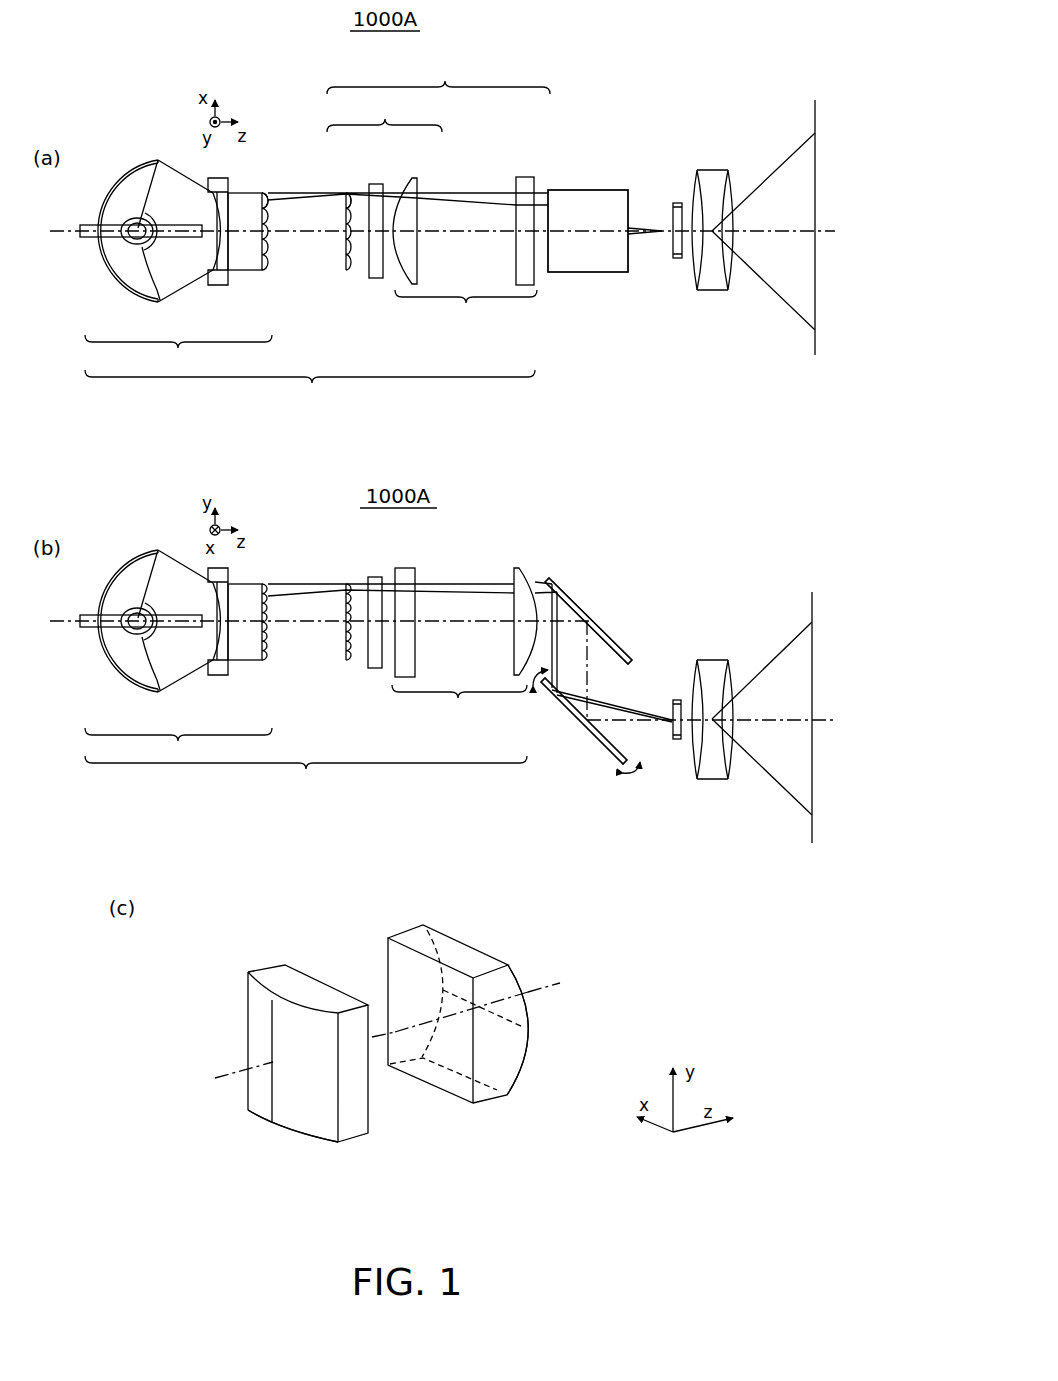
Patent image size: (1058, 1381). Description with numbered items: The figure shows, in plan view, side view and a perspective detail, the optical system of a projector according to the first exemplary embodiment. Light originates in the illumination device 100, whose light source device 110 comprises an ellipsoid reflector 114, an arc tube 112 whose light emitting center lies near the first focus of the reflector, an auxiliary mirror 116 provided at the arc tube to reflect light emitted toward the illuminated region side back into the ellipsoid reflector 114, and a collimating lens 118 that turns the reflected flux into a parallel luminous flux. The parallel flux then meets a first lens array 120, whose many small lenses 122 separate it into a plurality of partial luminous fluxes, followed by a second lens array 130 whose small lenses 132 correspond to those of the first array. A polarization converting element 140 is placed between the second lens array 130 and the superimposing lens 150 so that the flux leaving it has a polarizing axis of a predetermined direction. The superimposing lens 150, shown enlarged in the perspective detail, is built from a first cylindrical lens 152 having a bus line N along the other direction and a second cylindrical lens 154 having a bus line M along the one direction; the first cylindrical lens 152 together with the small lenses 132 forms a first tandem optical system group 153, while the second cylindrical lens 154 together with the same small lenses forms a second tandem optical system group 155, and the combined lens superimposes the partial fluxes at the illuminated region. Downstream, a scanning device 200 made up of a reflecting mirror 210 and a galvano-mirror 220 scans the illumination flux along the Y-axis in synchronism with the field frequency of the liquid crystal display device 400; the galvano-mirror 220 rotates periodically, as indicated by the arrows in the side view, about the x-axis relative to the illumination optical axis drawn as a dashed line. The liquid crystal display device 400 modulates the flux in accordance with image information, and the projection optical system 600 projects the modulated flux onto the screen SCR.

The illumination device 100 is at (310, 583).
The light source device 110 is at (178, 549).
The arc tube 112 is at (160, 287).
The ellipsoid reflector 114 is at (128, 287).
The auxiliary mirror 116 is at (145, 238).
The collimating lens 118 is at (228, 285).
The first lens array 120 is at (262, 270).
The small lens 122 is at (268, 193).
The second lens array 130 is at (350, 270).
The small lens 132 is at (350, 193).
The polarization converting element 140 is at (378, 278).
The superimposing lens 150 is at (372, 1196).
The first cylindrical lens 152 is at (415, 178).
The first tandem optical system group 153 is at (384, 111).
The second cylindrical lens 154 is at (525, 177).
The second tandem optical system group 155 is at (438, 74).
The scanning device 200 is at (599, 160).
The reflecting mirror 210 is at (600, 272).
The galvano-mirror 220 is at (590, 727).
The liquid crystal display device 400 is at (677, 203).
The projection optical system 600 is at (716, 170).
The screen SCR is at (810, 340).
The bus line N is at (267, 1107).
The bus line M is at (513, 1022).